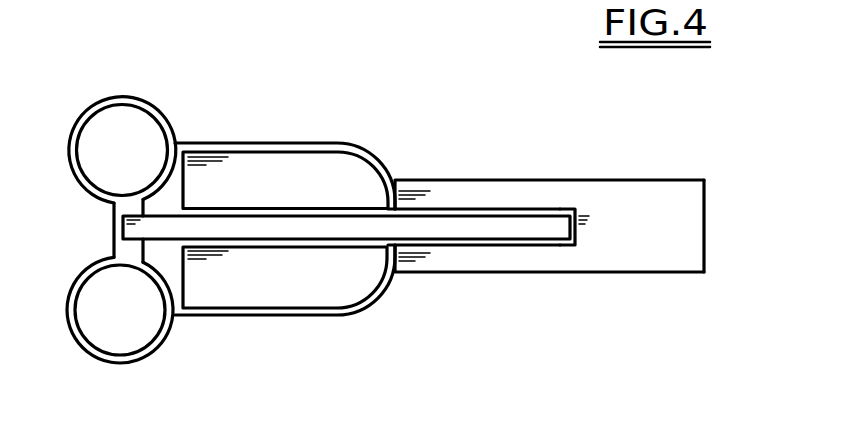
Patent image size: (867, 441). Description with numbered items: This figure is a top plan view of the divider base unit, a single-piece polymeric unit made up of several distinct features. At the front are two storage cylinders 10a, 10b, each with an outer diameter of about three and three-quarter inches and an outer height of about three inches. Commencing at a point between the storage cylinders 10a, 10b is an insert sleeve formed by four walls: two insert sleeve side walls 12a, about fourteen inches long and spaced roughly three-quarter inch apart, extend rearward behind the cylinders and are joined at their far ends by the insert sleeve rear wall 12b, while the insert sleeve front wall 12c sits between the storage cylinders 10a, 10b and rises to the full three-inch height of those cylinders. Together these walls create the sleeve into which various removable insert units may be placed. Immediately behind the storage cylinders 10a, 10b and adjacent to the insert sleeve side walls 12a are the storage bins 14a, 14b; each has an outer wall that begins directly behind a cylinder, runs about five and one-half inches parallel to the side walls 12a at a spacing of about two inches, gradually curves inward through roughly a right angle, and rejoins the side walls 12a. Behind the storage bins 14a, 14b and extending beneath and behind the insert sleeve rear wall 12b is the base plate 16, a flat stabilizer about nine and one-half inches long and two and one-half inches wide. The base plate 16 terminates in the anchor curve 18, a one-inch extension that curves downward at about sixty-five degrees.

The storage cylinder 10a is at (128, 122).
The storage cylinder 10b is at (123, 330).
The insert sleeve side walls 12a is at (450, 243).
The insert sleeve rear wall 12b is at (580, 223).
The insert sleeve front wall 12c is at (116, 228).
The storage bin 14a is at (228, 163).
The storage bin 14b is at (237, 292).
The base plate 16 is at (605, 192).
The anchor curve 18 is at (705, 232).